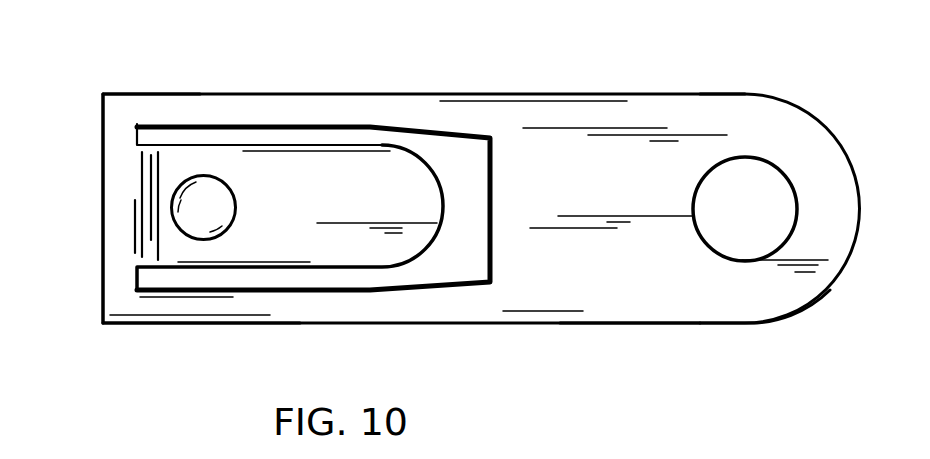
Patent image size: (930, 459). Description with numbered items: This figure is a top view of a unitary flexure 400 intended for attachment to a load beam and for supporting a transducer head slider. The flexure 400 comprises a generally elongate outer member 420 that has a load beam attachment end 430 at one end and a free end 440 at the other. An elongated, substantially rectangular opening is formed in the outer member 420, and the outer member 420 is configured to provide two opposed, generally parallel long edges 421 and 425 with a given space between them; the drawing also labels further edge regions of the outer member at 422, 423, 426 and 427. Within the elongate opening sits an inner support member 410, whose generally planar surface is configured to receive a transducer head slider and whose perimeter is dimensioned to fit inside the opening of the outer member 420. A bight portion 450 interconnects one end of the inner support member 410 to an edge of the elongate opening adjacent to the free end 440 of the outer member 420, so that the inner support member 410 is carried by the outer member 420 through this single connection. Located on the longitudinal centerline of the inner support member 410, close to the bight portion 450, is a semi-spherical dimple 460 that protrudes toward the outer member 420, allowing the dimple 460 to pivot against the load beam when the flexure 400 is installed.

The flexure 400 is at (557, 331).
The inner support member 410 is at (352, 242).
The outer member 420 is at (552, 93).
The long edge 421 is at (623, 308).
The rounded end edge 422 is at (704, 312).
The bottom left edge 423 is at (152, 325).
The long edge 425 is at (397, 108).
The top edge 426 is at (720, 112).
The top left corner 427 is at (143, 93).
The load beam attachment end 430 is at (819, 115).
The free end 440 is at (102, 280).
The bight portion 450 is at (148, 150).
The semi-spherical dimple 460 is at (222, 179).